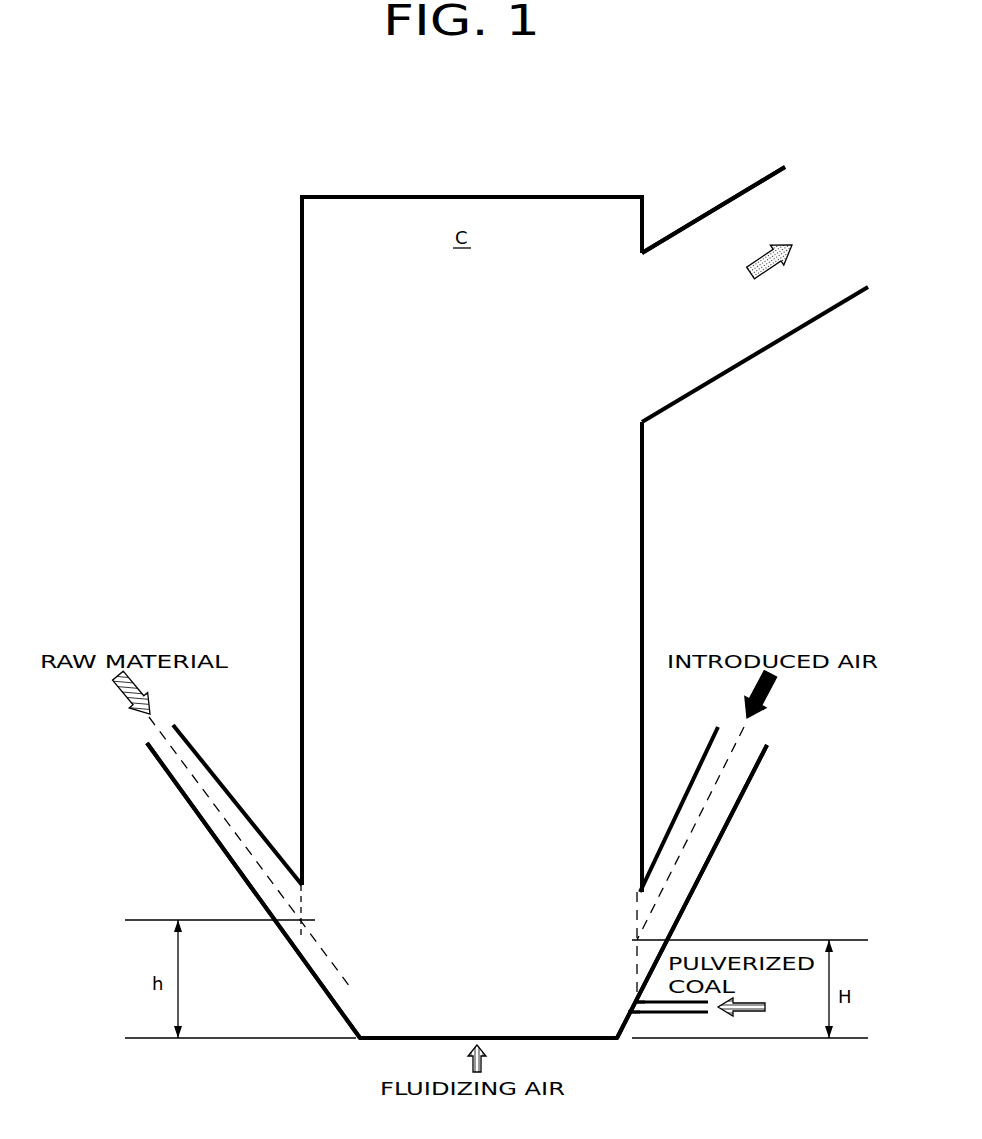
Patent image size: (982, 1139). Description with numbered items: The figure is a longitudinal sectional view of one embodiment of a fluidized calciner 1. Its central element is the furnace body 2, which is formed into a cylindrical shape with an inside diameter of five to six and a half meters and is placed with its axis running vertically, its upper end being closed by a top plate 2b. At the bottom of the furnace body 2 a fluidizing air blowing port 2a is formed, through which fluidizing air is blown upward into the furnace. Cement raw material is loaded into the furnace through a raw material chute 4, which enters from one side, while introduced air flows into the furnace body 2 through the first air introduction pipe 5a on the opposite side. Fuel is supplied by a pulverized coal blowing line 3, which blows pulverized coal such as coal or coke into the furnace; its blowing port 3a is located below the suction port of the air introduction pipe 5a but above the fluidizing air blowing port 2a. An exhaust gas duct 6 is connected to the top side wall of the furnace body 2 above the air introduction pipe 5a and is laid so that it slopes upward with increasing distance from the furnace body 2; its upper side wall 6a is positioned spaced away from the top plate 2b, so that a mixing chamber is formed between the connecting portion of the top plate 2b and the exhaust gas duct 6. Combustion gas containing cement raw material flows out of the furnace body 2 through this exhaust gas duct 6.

The fluidized calciner 1 is at (457, 618).
The furnace body 2 is at (301, 522).
The fluidizing air blowing port 2a is at (545, 1040).
The top plate 2b is at (505, 195).
The pulverized coal blowing line 3 is at (665, 1014).
The blowing port 3a is at (632, 1003).
The raw material chute 4 is at (220, 770).
The first air introduction pipe 5a is at (740, 805).
The exhaust gas duct 6 is at (760, 350).
The upper side wall 6a is at (718, 205).